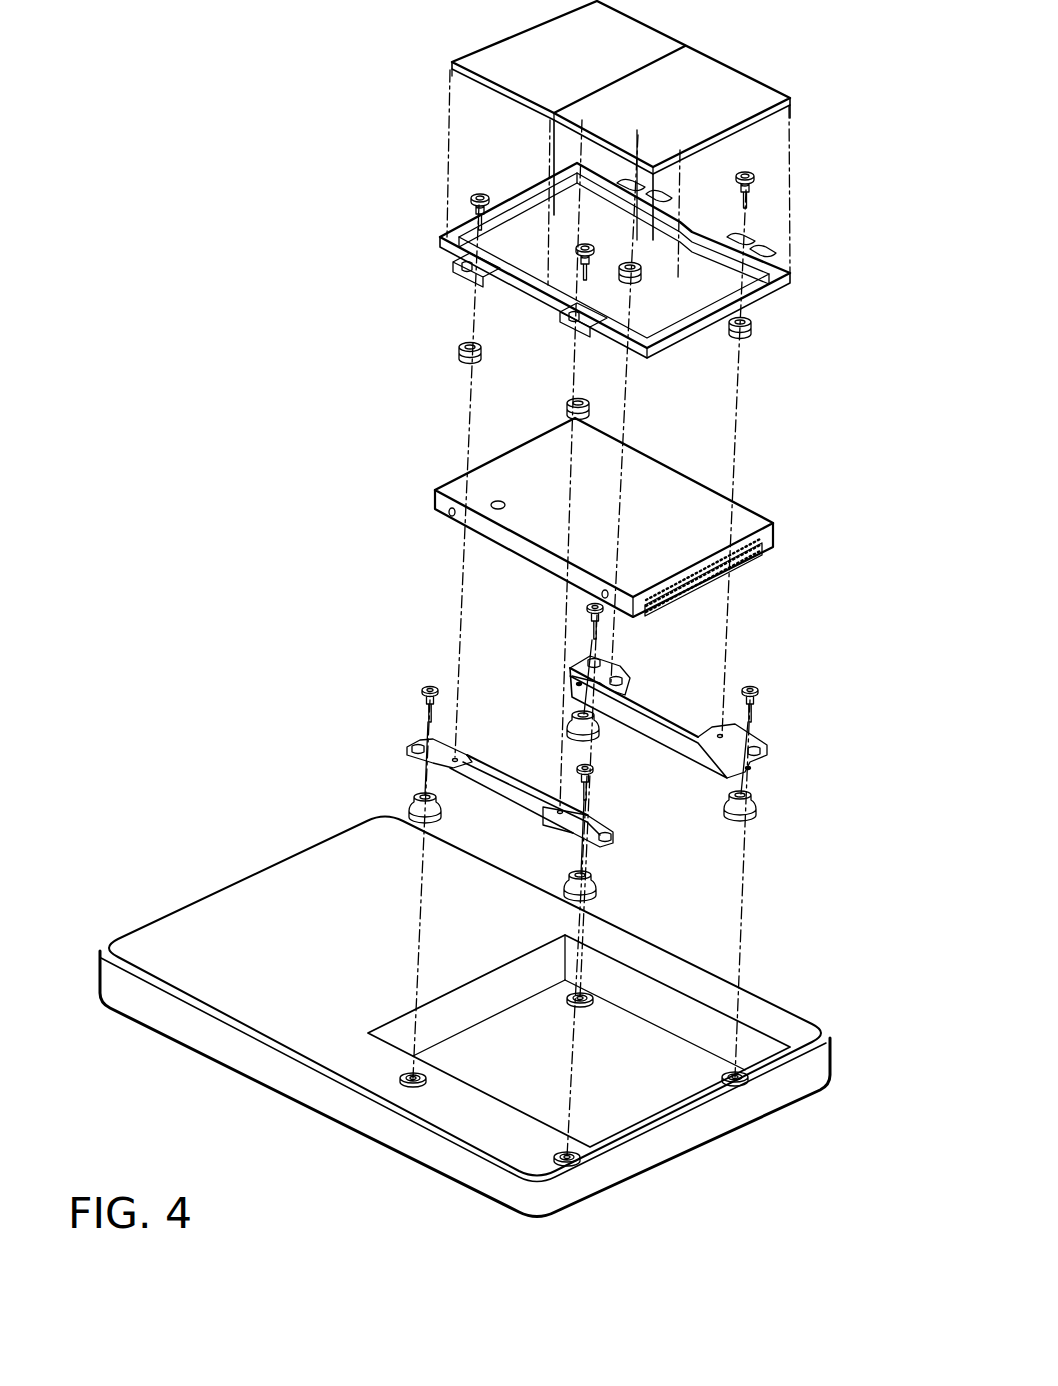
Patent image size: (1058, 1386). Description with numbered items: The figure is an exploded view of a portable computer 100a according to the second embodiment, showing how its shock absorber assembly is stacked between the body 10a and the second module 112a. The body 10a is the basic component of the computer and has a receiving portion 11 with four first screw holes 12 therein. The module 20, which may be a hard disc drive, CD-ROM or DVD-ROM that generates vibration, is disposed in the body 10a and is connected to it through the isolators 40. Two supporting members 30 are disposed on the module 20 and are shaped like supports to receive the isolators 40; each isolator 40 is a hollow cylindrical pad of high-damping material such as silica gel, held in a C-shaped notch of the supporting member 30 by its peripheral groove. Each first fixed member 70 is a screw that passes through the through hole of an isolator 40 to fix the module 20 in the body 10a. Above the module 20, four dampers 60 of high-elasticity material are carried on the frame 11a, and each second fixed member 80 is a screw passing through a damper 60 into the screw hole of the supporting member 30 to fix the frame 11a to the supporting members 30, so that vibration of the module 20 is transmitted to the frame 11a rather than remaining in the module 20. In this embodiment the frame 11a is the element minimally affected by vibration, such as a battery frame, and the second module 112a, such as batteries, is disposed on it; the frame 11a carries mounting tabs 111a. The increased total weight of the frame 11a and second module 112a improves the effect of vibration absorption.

The portable computer 100a is at (260, 98).
The second module 112a is at (640, 120).
The frame 11a is at (678, 260).
The mounting tabs 111a is at (577, 333).
The second fixed member 80 is at (756, 183).
The damper 60 is at (652, 268).
The module 20 is at (650, 517).
The supporting member 30 is at (587, 735).
The first fixed member 70 is at (590, 618).
The isolator 40 is at (569, 716).
The body 10a is at (465, 1012).
The receiving portion 11 is at (650, 1097).
The first screw hole 12 is at (592, 993).